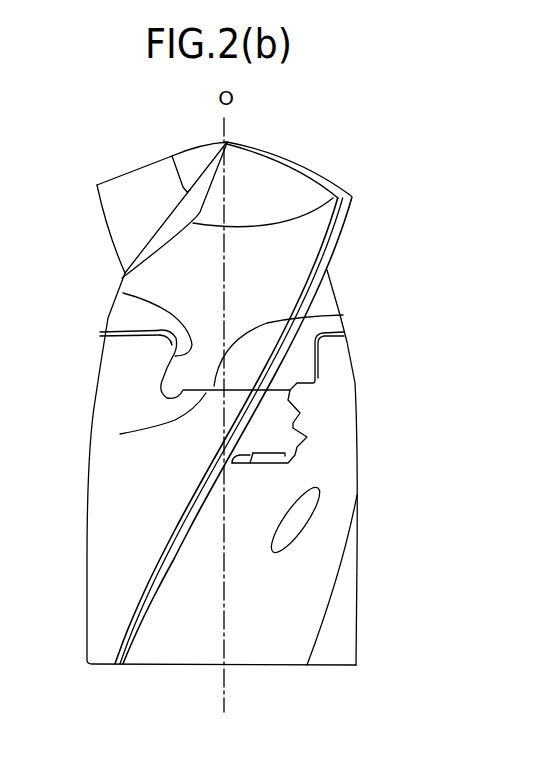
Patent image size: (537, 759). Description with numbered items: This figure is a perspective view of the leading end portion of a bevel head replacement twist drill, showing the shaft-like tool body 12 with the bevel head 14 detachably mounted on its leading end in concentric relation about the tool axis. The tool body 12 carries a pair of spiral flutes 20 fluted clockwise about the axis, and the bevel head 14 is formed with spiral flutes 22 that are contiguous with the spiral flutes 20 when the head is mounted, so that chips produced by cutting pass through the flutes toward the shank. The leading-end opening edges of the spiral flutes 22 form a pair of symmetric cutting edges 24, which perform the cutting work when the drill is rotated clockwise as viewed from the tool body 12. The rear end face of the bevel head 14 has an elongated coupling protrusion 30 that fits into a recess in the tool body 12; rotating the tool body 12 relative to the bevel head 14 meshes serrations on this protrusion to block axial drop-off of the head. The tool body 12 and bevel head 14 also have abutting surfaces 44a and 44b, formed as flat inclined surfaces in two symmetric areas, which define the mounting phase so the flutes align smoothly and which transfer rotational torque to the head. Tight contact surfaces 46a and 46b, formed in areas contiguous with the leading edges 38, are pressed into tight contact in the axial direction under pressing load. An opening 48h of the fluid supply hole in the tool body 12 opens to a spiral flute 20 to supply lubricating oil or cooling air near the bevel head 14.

The tool body 12 is at (400, 590).
The bevel head 14 is at (370, 221).
The spiral flutes 20 is at (237, 618).
The spiral flutes 22 is at (133, 223).
The cutting edges 24 is at (142, 168).
The coupling protrusion 30 is at (277, 418).
The leading edge 38 is at (172, 561).
The abutting surface 44a is at (123, 293).
The abutting surface 44b is at (167, 363).
The tight contact surface 46a is at (343, 315).
The tight contact surface 46b is at (120, 434).
The opening of the fluid supply hole 48h is at (292, 522).